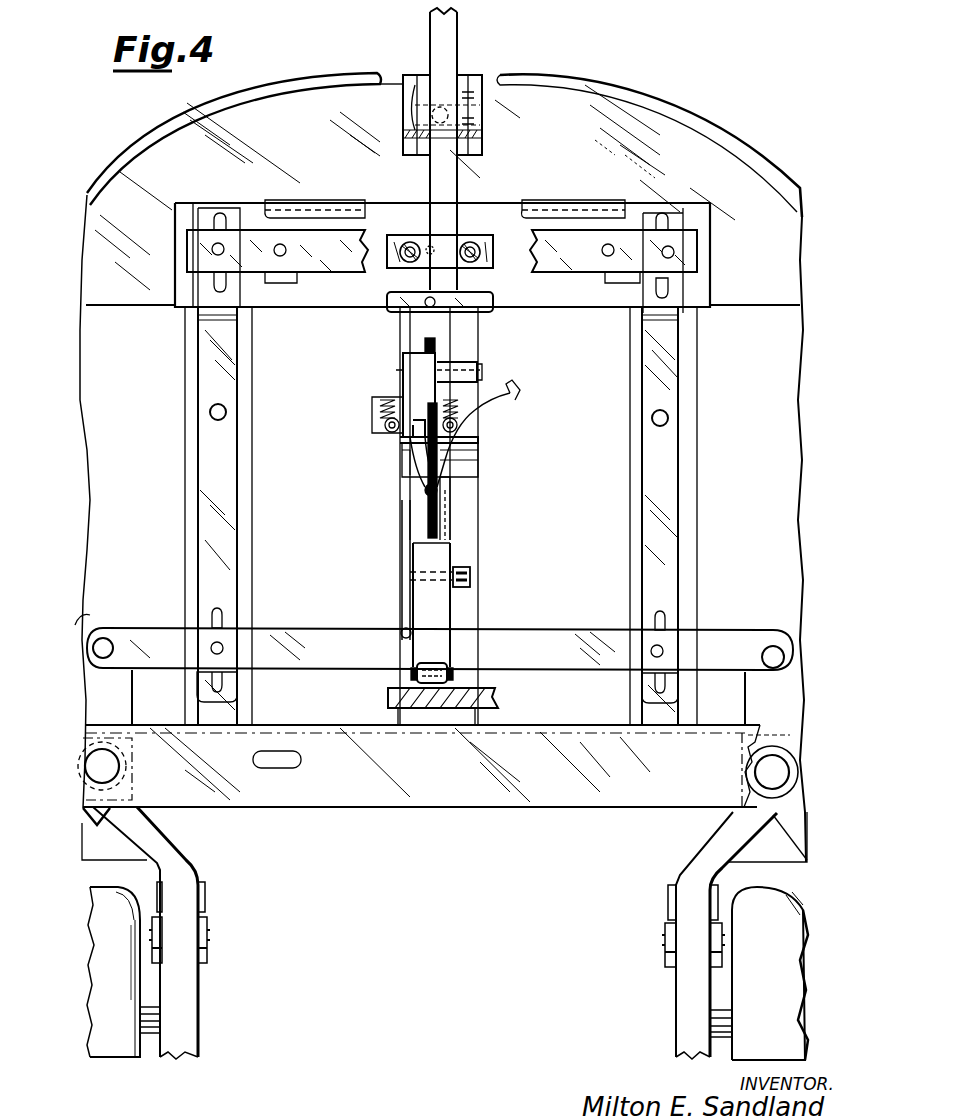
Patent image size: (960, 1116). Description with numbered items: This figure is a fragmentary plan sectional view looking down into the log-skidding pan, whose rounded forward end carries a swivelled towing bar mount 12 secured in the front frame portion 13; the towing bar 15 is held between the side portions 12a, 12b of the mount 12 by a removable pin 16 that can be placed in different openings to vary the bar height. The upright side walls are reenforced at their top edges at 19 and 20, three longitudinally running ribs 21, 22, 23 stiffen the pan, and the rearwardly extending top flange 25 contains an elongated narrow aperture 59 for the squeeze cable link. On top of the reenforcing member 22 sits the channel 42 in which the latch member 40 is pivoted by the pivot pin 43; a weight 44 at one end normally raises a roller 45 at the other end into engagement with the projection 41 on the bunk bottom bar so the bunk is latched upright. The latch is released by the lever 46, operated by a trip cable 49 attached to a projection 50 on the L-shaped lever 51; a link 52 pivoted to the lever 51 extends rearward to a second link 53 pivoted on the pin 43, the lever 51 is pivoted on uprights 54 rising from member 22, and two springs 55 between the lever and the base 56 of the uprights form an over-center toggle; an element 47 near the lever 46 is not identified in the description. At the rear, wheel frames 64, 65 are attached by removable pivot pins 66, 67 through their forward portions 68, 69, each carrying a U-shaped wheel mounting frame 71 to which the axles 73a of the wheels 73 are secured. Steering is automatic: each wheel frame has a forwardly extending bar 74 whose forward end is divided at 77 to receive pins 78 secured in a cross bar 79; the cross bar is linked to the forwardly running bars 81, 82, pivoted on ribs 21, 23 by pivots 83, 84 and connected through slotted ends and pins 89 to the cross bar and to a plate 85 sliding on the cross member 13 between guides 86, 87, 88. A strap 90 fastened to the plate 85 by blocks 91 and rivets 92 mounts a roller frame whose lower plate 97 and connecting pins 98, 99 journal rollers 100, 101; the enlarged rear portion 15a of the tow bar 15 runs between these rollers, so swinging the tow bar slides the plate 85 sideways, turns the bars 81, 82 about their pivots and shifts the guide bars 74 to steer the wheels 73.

The towing bar mount 12 is at (395, 104).
The side portion of mount 12a is at (415, 72).
The side portion of mount 12b is at (460, 75).
The front frame portion 13 is at (707, 160).
The towing bar 15 is at (432, 45).
The enlarged rear portion of towing bar 15a is at (457, 283).
The pin 16 is at (470, 110).
The reenforced top edge 19 is at (112, 150).
The reenforced top edge 20 is at (693, 100).
The longitudinal rib 21 is at (257, 468).
The longitudinal rib 22 is at (470, 623).
The longitudinal rib 23 is at (630, 385).
The top flange 25 is at (355, 807).
The latch member 40 is at (447, 647).
The projection 41 is at (497, 697).
The channel 42 is at (400, 592).
The pivot pin 43 is at (475, 578).
The weight 44 is at (450, 537).
The roller 45 is at (418, 675).
The lever 46 is at (437, 512).
The pivot 47 is at (445, 487).
The trip cable 49 is at (505, 400).
The projection 50 is at (421, 407).
The L-shaped lever 51 is at (405, 355).
The link 52 is at (403, 447).
The second link 53 is at (400, 623).
The uprights 54 is at (478, 368).
The springs 55 is at (462, 405).
The base of uprights 56 is at (405, 333).
The aperture 59 is at (282, 768).
The wheel frame 64 is at (197, 858).
The wheel frame 65 is at (700, 850).
The removable pivot pin 66 is at (98, 778).
The removable pivot pin 67 is at (790, 800).
The forward portion of wheel frame 68 is at (55, 735).
The forward portion of wheel frame 69 is at (796, 766).
The wheel mounting U-shaped frame 71 is at (207, 898).
The wheels 73 is at (100, 908).
The axles 73a is at (150, 1033).
The guide bar 74 is at (128, 697).
The divided forward end 77 is at (779, 582).
The pins 78 is at (110, 640).
The cross bar 79 is at (330, 668).
The forwardly running bar 81 is at (200, 468).
The forwardly running bar 82 is at (678, 487).
The pivot 83 is at (210, 412).
The pivot 84 is at (669, 417).
The plate 85 is at (178, 275).
The guide 86 is at (297, 210).
The guide 87 is at (525, 205).
The guide 88 is at (493, 312).
The pins 89 is at (211, 248).
The strap 90 is at (328, 268).
The blocks 91 is at (280, 292).
The rivets 92 is at (273, 250).
The lower plate of roller frame 97 is at (390, 268).
The connecting pin 98 is at (412, 242).
The connecting pin 99 is at (470, 242).
The roller 100 is at (397, 242).
The roller 101 is at (488, 242).